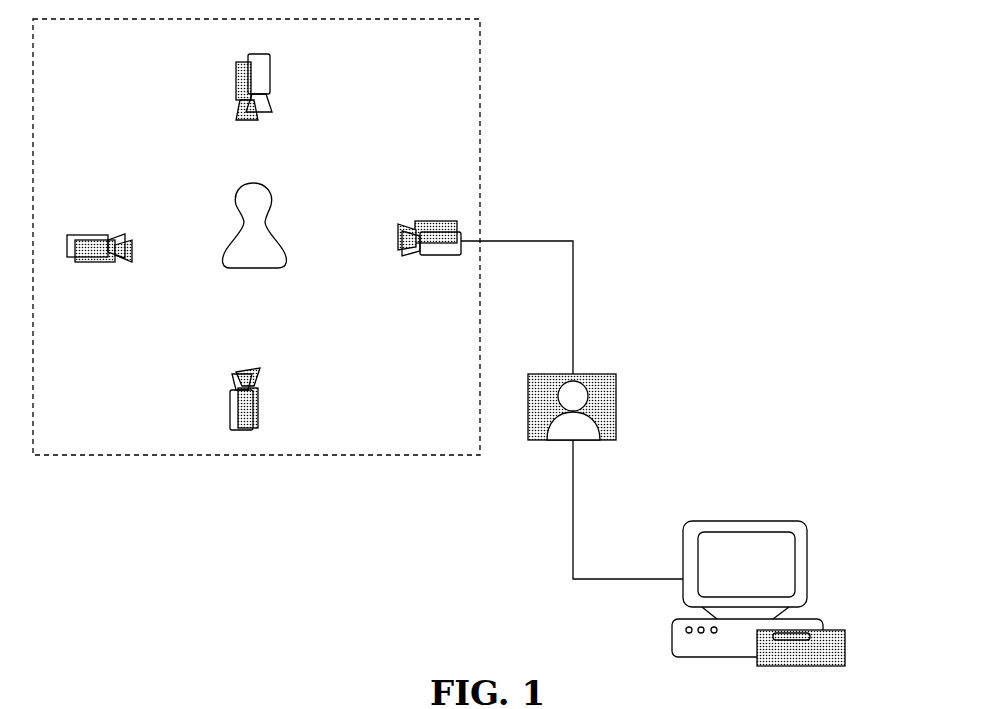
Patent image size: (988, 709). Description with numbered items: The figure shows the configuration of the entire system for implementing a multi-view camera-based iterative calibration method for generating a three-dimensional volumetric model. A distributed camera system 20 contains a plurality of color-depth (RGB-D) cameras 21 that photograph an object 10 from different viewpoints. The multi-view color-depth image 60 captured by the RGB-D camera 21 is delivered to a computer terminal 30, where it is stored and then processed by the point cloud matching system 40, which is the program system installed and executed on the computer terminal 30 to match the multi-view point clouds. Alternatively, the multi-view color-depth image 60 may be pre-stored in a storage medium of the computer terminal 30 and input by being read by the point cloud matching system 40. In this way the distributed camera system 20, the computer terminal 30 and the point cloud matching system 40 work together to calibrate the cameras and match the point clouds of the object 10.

The object 10 is at (275, 204).
The distributed camera system 20 is at (480, 85).
The color-depth (RGB-D) camera 21 is at (272, 85).
The computer terminal 30 is at (807, 558).
The point cloud matching system 40 is at (845, 637).
The multi-view color-depth image 60 is at (616, 424).